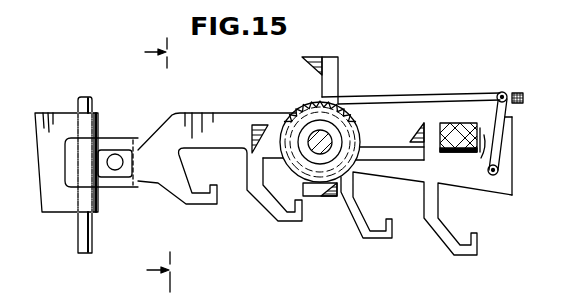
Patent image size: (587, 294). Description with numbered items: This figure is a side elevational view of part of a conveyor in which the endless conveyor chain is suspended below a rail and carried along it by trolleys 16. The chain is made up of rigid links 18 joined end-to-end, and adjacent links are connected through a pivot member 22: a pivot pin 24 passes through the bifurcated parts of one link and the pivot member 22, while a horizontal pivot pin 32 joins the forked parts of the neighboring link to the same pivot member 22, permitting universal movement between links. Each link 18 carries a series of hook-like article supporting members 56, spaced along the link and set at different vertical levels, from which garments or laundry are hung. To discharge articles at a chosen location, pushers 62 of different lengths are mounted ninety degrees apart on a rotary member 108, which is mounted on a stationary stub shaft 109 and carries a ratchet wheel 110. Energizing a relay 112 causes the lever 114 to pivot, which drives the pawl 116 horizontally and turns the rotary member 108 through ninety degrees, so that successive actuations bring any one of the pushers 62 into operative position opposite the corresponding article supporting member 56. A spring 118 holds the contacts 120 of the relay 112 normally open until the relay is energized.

The trolley 16 is at (153, 164).
The rigid link 18 is at (52, 117).
The pivot member 22 is at (108, 143).
The pivot pin 24 is at (80, 233).
The horizontal pivot pin 32 is at (116, 170).
The article supporting member 56 is at (262, 198).
The pusher 62 is at (322, 55).
The rotary member 108 is at (296, 112).
The stationary stub shaft 109 is at (333, 150).
The ratchet wheel 110 is at (303, 108).
The relay 112 is at (452, 123).
The lever 114 is at (492, 176).
The pawl 116 is at (390, 97).
The spring 118 is at (513, 93).
The contacts 120 is at (484, 146).